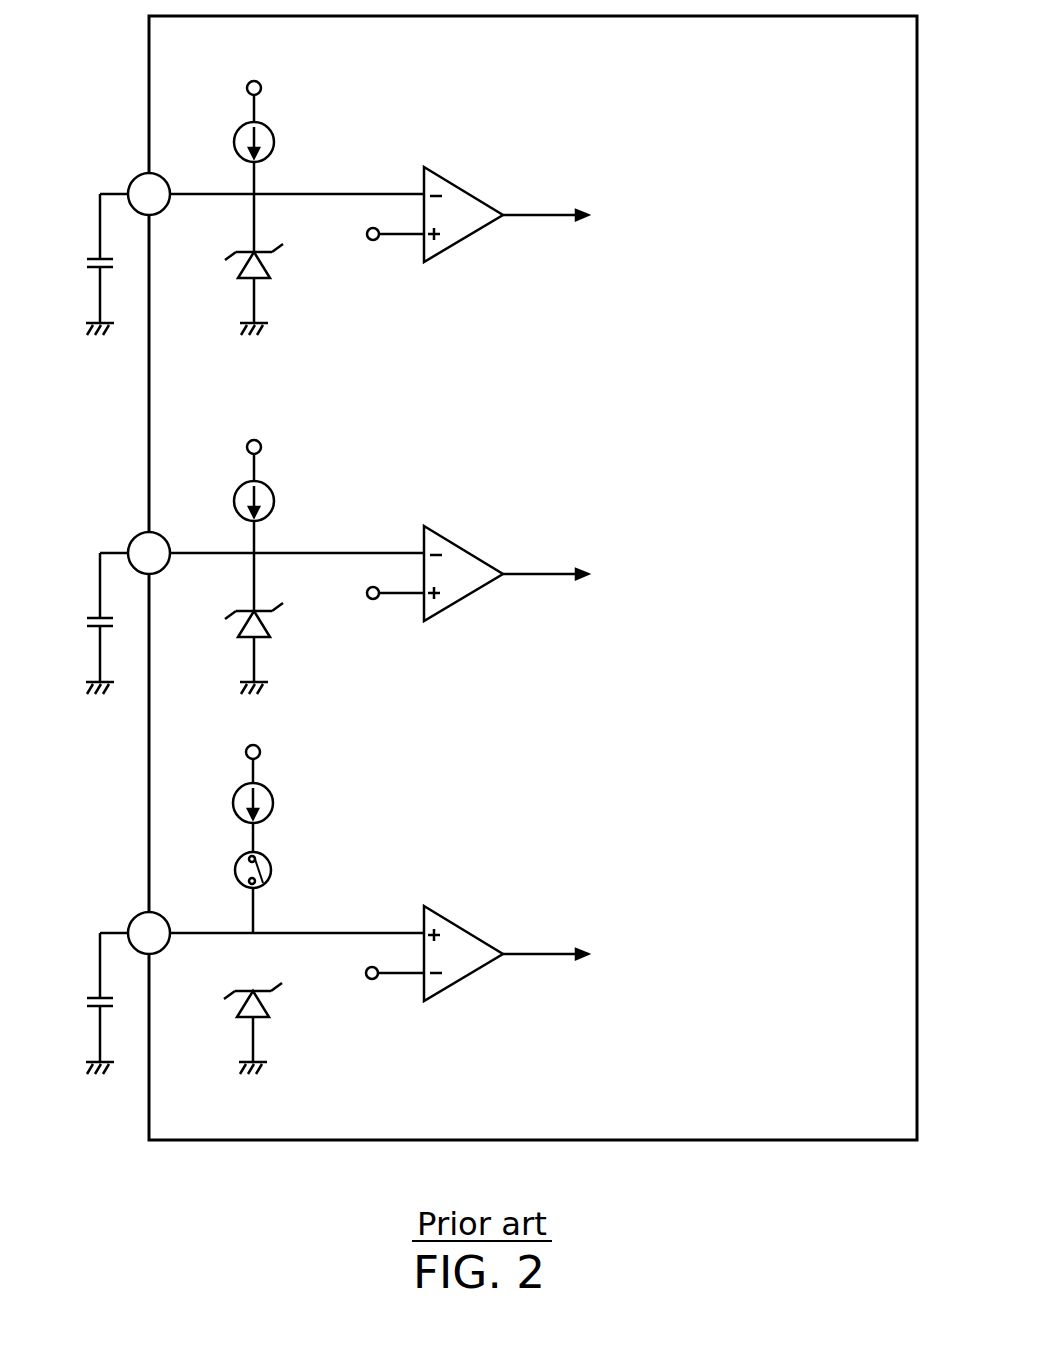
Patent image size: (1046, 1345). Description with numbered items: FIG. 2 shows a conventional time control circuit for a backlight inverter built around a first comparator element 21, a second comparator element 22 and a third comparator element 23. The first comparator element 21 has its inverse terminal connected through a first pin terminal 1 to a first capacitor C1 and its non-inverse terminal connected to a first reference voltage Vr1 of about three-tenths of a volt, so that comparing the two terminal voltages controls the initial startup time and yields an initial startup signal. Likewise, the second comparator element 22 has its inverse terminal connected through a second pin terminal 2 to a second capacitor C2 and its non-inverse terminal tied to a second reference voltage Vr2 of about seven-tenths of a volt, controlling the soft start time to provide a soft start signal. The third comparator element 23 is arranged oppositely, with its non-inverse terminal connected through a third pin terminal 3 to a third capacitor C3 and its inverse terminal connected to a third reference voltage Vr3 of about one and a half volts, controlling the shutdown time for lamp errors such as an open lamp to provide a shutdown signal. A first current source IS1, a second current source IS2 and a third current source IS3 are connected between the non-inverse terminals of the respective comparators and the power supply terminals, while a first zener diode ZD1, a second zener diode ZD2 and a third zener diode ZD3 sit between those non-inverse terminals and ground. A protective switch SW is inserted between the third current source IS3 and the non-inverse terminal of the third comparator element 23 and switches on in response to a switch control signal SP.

The first pin terminal 1 is at (149, 194).
The second pin terminal 2 is at (149, 553).
The third pin terminal 3 is at (149, 933).
The first comparator element 21 is at (463, 190).
The second comparator element 22 is at (463, 549).
The third comparator element 23 is at (458, 927).
The first capacitor C1 is at (81, 264).
The second capacitor C2 is at (79, 623).
The third capacitor C3 is at (79, 1003).
The first current source IS1 is at (276, 146).
The second current source IS2 is at (276, 505).
The third current source IS3 is at (274, 778).
The first zener diode ZD1 is at (231, 289).
The second zener diode ZD2 is at (229, 648).
The third zener diode ZD3 is at (227, 1028).
The first reference voltage Vr1 is at (383, 249).
The second reference voltage Vr2 is at (383, 608).
The third reference voltage Vr3 is at (383, 988).
The protective switch SW is at (230, 892).
The switch control signal SP is at (280, 870).